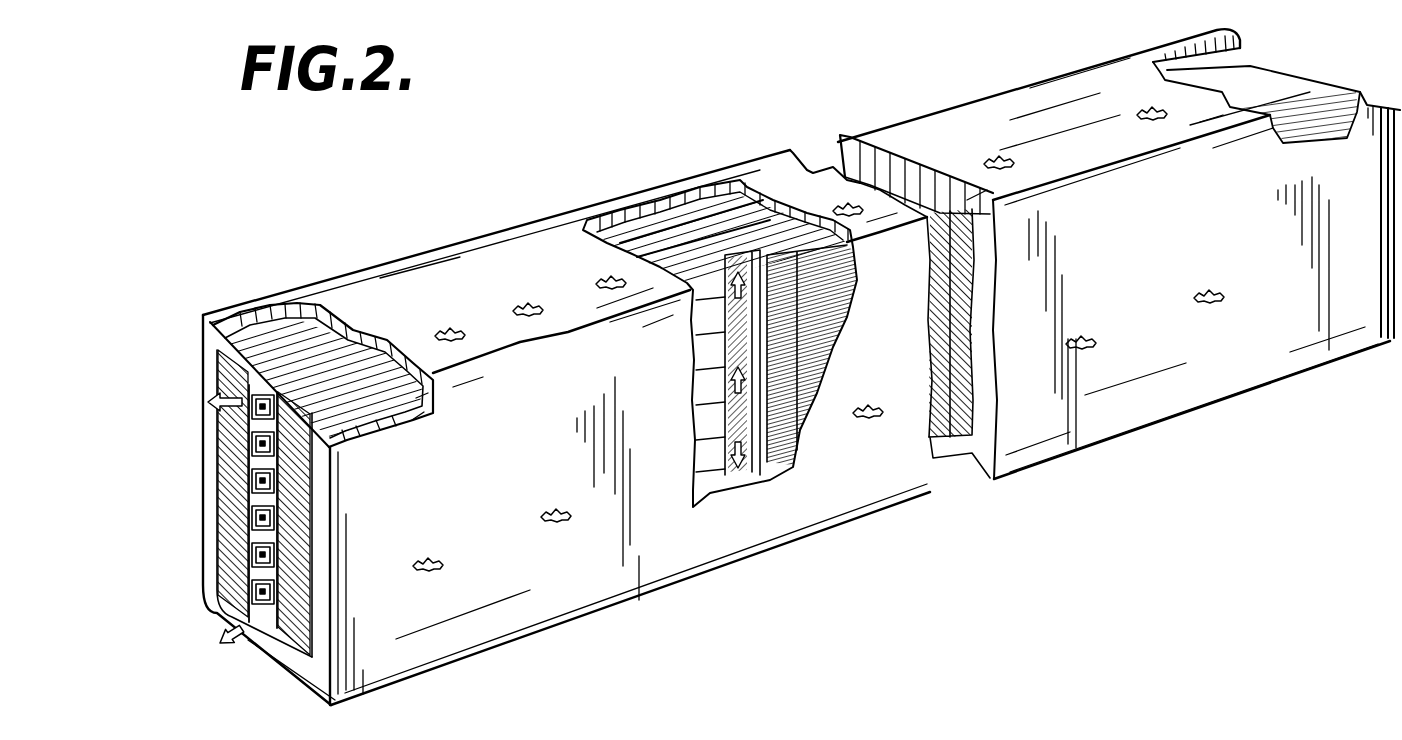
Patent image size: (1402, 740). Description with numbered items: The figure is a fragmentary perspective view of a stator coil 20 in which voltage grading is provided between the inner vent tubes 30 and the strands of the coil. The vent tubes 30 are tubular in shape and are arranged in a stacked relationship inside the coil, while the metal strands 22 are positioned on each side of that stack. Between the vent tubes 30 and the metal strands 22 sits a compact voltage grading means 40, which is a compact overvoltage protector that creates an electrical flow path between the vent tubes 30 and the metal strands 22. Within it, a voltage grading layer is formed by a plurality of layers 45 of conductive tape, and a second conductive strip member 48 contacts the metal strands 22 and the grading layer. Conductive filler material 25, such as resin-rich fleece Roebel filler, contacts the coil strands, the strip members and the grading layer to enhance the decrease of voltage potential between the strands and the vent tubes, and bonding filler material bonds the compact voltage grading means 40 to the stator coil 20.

The stator coil 20 is at (412, 242).
The metal strands 22 is at (227, 430).
The conductive filler material 25 is at (300, 662).
The vent tubes 30 is at (220, 492).
The compact voltage grading means 40 is at (718, 235).
The layers of conductive tape 45 is at (762, 253).
The second conductive strip member 48 is at (670, 253).